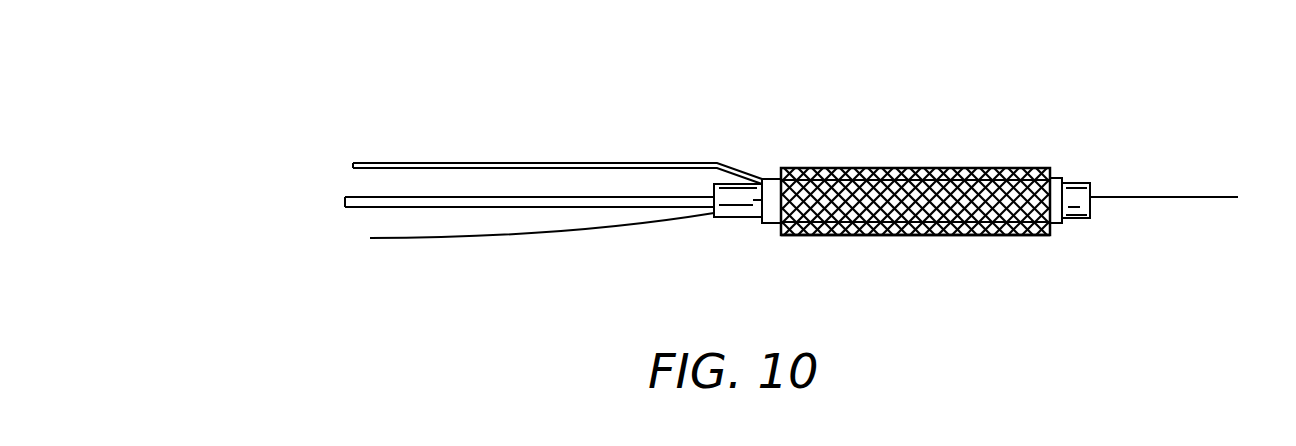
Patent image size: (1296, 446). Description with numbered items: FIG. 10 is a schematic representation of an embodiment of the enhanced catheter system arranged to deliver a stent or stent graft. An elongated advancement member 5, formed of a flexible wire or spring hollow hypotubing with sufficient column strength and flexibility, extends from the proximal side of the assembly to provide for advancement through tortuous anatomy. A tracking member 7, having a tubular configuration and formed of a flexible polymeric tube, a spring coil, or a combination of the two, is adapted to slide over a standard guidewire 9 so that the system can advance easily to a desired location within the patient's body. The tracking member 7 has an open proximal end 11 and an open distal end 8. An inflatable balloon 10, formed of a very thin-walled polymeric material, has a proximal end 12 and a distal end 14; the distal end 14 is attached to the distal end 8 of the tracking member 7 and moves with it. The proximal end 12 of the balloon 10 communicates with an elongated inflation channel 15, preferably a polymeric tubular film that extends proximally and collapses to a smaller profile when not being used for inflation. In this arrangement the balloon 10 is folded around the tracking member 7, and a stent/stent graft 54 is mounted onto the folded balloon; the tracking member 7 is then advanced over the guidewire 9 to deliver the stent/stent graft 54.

The advancement member 5 is at (378, 208).
The tracking member 7 is at (753, 200).
The distal end 8 is at (1090, 208).
The guidewire 9 is at (457, 240).
The inflatable balloon 10 is at (930, 168).
The proximal end 11 is at (713, 218).
The proximal end 12 is at (768, 180).
The distal end 14 is at (1058, 178).
The inflation channel 15 is at (557, 162).
The stent/stent graft 54 is at (968, 237).